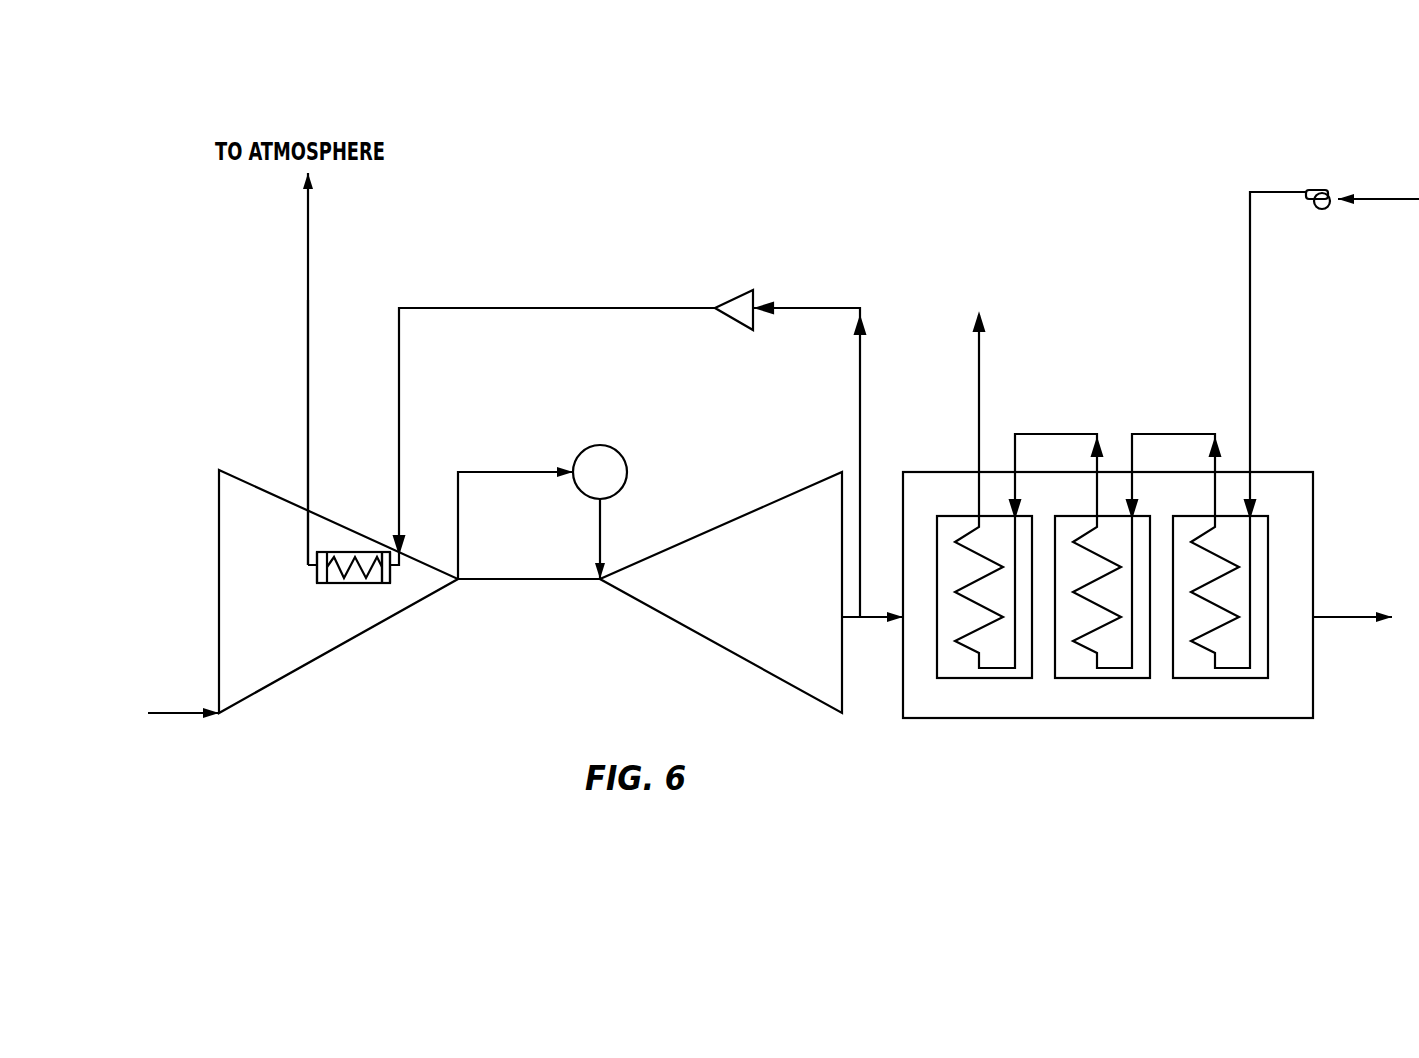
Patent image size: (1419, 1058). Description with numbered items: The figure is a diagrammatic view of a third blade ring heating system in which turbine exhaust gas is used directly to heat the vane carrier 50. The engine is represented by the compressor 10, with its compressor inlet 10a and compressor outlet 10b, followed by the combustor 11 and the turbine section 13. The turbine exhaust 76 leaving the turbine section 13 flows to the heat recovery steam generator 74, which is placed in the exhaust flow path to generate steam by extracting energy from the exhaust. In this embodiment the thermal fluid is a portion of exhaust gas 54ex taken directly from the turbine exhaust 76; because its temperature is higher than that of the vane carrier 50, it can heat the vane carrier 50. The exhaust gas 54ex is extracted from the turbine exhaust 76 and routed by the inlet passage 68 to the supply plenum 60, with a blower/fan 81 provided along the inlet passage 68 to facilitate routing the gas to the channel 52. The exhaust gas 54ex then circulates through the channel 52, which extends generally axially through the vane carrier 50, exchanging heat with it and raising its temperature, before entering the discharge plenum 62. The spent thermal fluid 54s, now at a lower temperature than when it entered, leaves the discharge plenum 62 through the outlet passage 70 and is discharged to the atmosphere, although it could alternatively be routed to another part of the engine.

The compressor 10 is at (237, 485).
The compressor inlet 10a is at (218, 540).
The compressor outlet 10b is at (458, 582).
The combustor 11 is at (612, 460).
The turbine section 13 is at (838, 698).
The vane carrier 50 is at (338, 586).
The channel 52 is at (365, 586).
The spent thermal fluid 54s is at (308, 255).
The exhaust gas 54ex is at (433, 308).
The supply plenum 60 is at (392, 586).
The discharge plenum 62 is at (305, 586).
The inlet passage 68 is at (403, 353).
The outlet passage 70 is at (297, 322).
The heat recovery steam generator 74 is at (1313, 718).
The turbine exhaust 76 is at (859, 622).
The blower/fan 81 is at (752, 300).